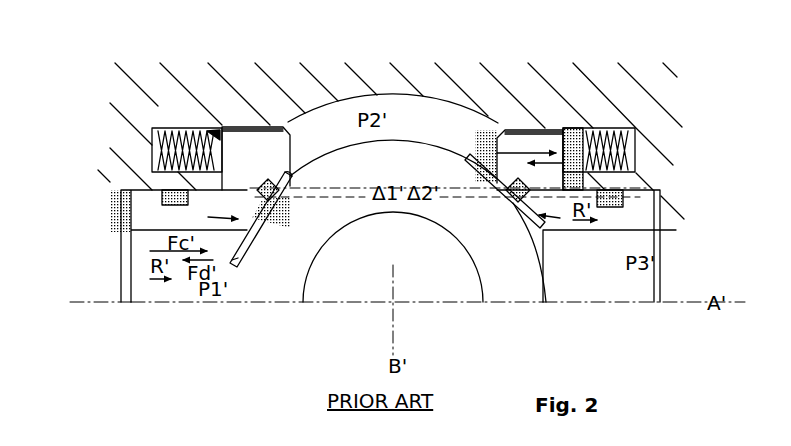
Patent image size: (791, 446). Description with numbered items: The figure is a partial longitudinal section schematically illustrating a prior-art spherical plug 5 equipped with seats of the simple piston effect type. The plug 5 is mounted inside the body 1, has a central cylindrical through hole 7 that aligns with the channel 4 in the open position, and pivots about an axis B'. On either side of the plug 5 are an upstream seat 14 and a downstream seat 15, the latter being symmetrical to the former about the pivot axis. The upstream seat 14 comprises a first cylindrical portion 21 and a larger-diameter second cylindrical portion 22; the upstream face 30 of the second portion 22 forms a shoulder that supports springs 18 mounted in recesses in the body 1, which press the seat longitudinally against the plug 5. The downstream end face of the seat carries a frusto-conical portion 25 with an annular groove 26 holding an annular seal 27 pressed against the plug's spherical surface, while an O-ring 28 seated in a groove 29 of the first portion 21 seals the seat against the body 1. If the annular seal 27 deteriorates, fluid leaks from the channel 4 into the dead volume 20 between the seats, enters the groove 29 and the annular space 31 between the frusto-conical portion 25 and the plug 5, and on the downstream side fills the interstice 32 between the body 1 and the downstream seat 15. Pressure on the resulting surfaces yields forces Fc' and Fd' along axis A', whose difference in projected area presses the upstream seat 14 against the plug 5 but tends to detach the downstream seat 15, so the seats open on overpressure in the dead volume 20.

The body 1 is at (318, 72).
The channel 4 is at (168, 293).
The upstream spherical plug 5 is at (272, 283).
The central cylindrical through hole 7 is at (330, 275).
The upstream seat 14 is at (227, 133).
The downstream seat 15 is at (552, 145).
The springs 18 is at (160, 128).
The dead volume 20 is at (392, 95).
The first cylindrical portion 21 is at (142, 222).
The second cylindrical portion 22 is at (253, 157).
The frusto-conical portion 25 is at (208, 220).
The annular groove 26 is at (288, 176).
The annular seal 27 is at (292, 194).
The O-ring 28 is at (180, 208).
The groove 29 is at (165, 206).
The upstream face 30 is at (215, 130).
The annular space 31 is at (240, 260).
The interstice 32 is at (508, 128).